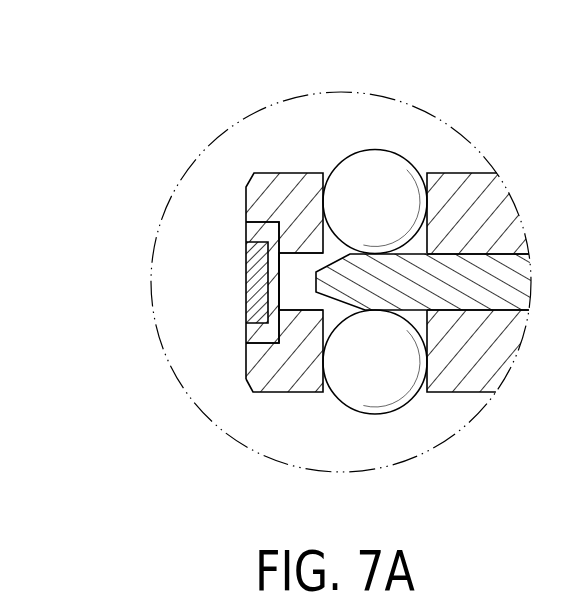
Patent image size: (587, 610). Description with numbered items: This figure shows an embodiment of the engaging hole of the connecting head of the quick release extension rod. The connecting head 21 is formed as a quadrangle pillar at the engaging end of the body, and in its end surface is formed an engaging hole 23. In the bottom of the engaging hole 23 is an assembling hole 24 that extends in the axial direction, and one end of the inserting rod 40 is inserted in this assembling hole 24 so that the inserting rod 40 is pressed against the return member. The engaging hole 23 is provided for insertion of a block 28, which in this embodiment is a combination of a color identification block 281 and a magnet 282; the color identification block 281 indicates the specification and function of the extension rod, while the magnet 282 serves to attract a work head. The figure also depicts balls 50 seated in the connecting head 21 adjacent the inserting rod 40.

The connecting head 21 is at (300, 203).
The engaging hole 23 is at (265, 216).
The assembling hole 24 is at (303, 295).
The block 28 is at (73, 237).
The color identification block 281 is at (257, 284).
The magnet 282 is at (258, 336).
The inserting rod 40 is at (462, 305).
The ball 50 is at (386, 158).